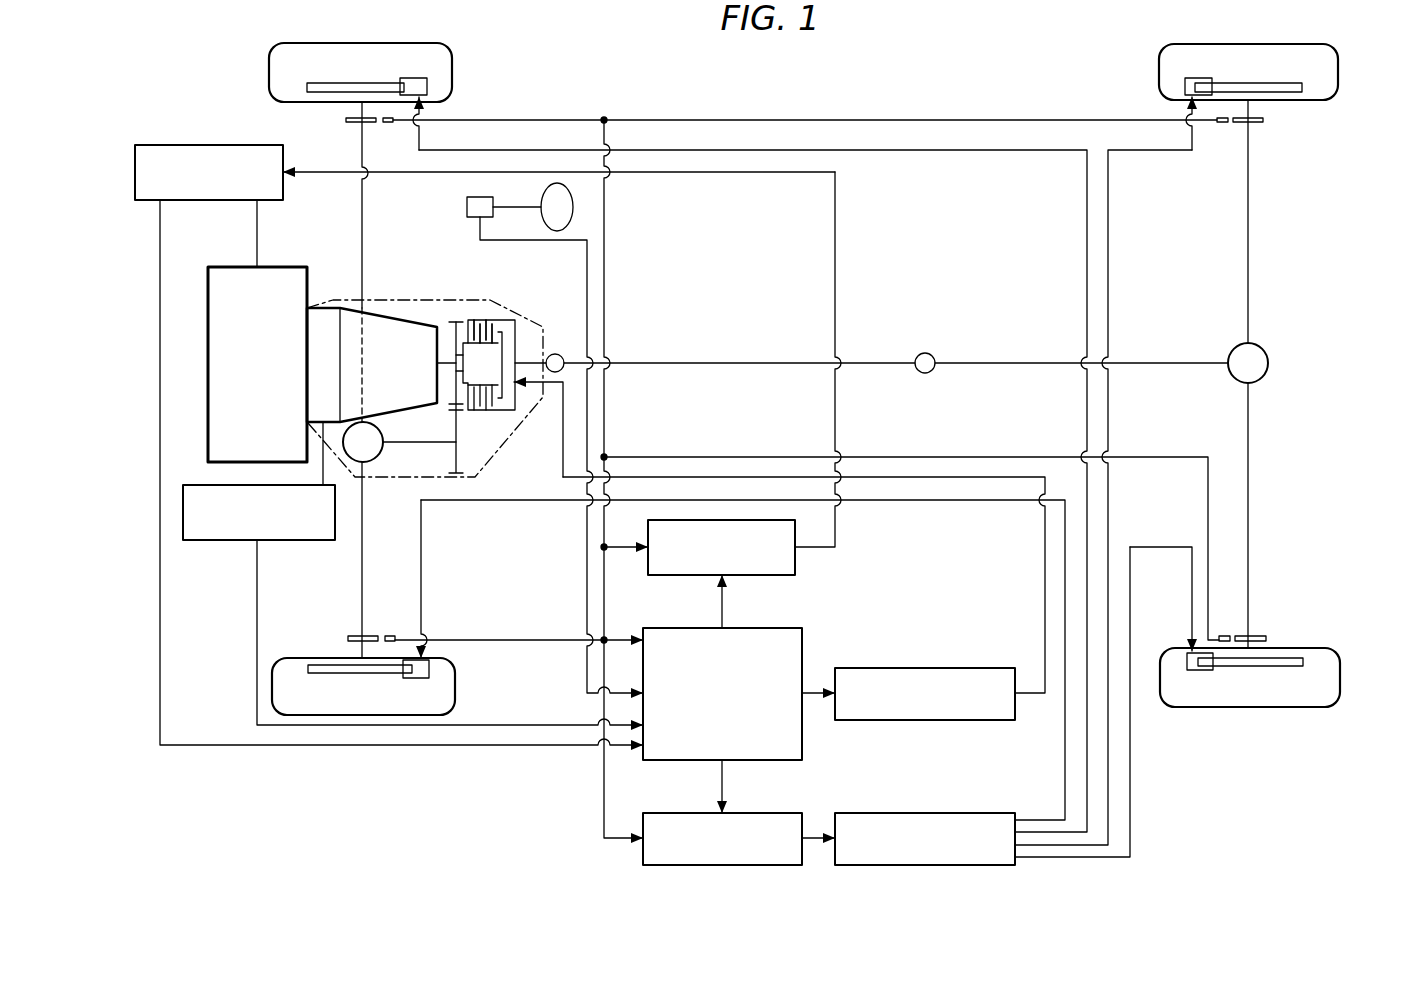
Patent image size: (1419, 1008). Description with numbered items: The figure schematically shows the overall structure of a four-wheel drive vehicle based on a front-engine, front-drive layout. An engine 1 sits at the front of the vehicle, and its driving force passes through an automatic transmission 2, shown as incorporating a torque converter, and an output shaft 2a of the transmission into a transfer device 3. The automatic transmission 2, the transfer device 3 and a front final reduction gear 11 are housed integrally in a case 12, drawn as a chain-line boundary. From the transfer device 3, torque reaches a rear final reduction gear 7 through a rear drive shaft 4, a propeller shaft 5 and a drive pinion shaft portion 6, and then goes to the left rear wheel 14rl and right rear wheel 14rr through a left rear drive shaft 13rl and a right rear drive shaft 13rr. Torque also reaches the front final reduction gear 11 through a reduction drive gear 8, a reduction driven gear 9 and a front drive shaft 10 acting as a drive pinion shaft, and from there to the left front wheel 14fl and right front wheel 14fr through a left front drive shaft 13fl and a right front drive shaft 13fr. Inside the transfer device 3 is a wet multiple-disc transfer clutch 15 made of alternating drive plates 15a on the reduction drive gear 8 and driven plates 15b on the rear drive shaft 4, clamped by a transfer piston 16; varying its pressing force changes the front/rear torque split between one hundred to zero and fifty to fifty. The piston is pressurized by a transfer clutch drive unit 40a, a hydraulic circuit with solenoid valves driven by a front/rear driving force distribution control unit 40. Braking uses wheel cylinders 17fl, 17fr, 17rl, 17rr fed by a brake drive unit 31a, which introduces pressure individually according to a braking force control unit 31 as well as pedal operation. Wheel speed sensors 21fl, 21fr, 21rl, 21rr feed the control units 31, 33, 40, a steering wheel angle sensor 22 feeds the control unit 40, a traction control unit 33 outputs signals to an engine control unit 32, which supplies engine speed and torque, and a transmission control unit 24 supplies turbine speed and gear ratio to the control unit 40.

The engine 1 is at (235, 266).
The automatic transmission 2 is at (355, 310).
The transmission output shaft 2a is at (445, 355).
The transfer device 3 is at (492, 428).
The rear drive shaft 4 is at (552, 352).
The propeller shaft 5 is at (735, 360).
The drive pinion shaft portion 6 is at (1010, 360).
The rear final reduction gear 7 is at (1268, 365).
The reduction drive gear 8 is at (455, 321).
The reduction driven gear 9 is at (459, 413).
The front drive shaft 10 is at (455, 440).
The front final reduction gear 11 is at (368, 463).
The case 12 is at (367, 300).
The right front drive shaft 13fr is at (362, 220).
The left front drive shaft 13fl is at (362, 576).
The right rear drive shaft 13rr is at (1248, 152).
The left rear drive shaft 13rl is at (1248, 576).
The right front wheel 14fr is at (269, 72).
The left front wheel 14fl is at (312, 658).
The right rear wheel 14rr is at (1338, 72).
The left rear wheel 14rl is at (1340, 675).
The multiple-disc clutch 15 is at (546, 252).
The drive plates 15a is at (486, 322).
The driven plates 15b is at (490, 332).
The transfer piston 16 is at (500, 390).
The right front wheel cylinder 17fr is at (427, 88).
The left front wheel cylinder 17fl is at (429, 670).
The right rear wheel cylinder 17rr is at (1185, 89).
The left rear wheel cylinder 17rl is at (1200, 672).
The wheel speed sensor 21fr is at (388, 124).
The wheel speed sensor 21fl is at (390, 634).
The wheel speed sensor 21rr is at (1220, 124).
The wheel speed sensor 21rl is at (1220, 634).
The steering wheel angle sensor 22 is at (467, 205).
The transmission control unit 24 is at (225, 541).
The braking force control unit 31 is at (755, 812).
The brake drive unit 31a is at (920, 812).
The engine control unit 32 is at (240, 145).
The traction control unit 33 is at (797, 563).
The front/rear driving force distribution control unit 40 is at (752, 627).
The transfer clutch drive unit 40a is at (920, 667).